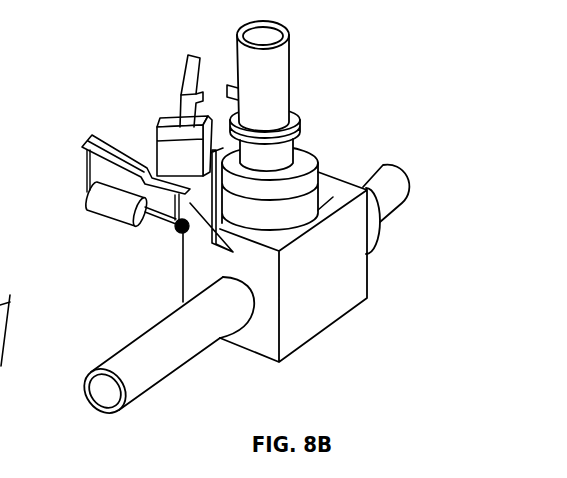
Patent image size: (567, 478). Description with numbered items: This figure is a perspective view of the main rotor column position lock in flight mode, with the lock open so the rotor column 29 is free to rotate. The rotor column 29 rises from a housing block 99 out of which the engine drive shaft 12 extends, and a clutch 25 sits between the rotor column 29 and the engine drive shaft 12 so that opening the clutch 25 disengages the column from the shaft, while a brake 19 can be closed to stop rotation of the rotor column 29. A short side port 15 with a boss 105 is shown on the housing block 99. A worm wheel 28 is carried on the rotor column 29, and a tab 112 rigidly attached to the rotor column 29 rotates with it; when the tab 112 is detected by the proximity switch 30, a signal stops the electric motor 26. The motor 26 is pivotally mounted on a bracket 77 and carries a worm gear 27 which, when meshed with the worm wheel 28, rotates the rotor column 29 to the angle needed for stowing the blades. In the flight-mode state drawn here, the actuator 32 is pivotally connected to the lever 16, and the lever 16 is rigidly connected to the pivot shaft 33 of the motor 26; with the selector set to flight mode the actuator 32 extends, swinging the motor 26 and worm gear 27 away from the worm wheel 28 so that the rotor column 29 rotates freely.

The engine drive shaft 12 is at (160, 380).
The outlet port 15 is at (405, 200).
The lever 16 is at (177, 233).
The brake 19 is at (318, 182).
The clutch 25 is at (307, 143).
The electric motor 26 is at (155, 132).
The worm gear 27 is at (182, 85).
The worm wheel 28 is at (292, 113).
The rotor column 29 is at (288, 43).
The proximity switch 30 is at (188, 58).
The actuator 32 is at (110, 222).
The pivot shaft 33 is at (233, 252).
The bracket 77 is at (82, 148).
The valve body 99 is at (338, 326).
The boss 105 is at (380, 243).
The tab 112 is at (233, 87).